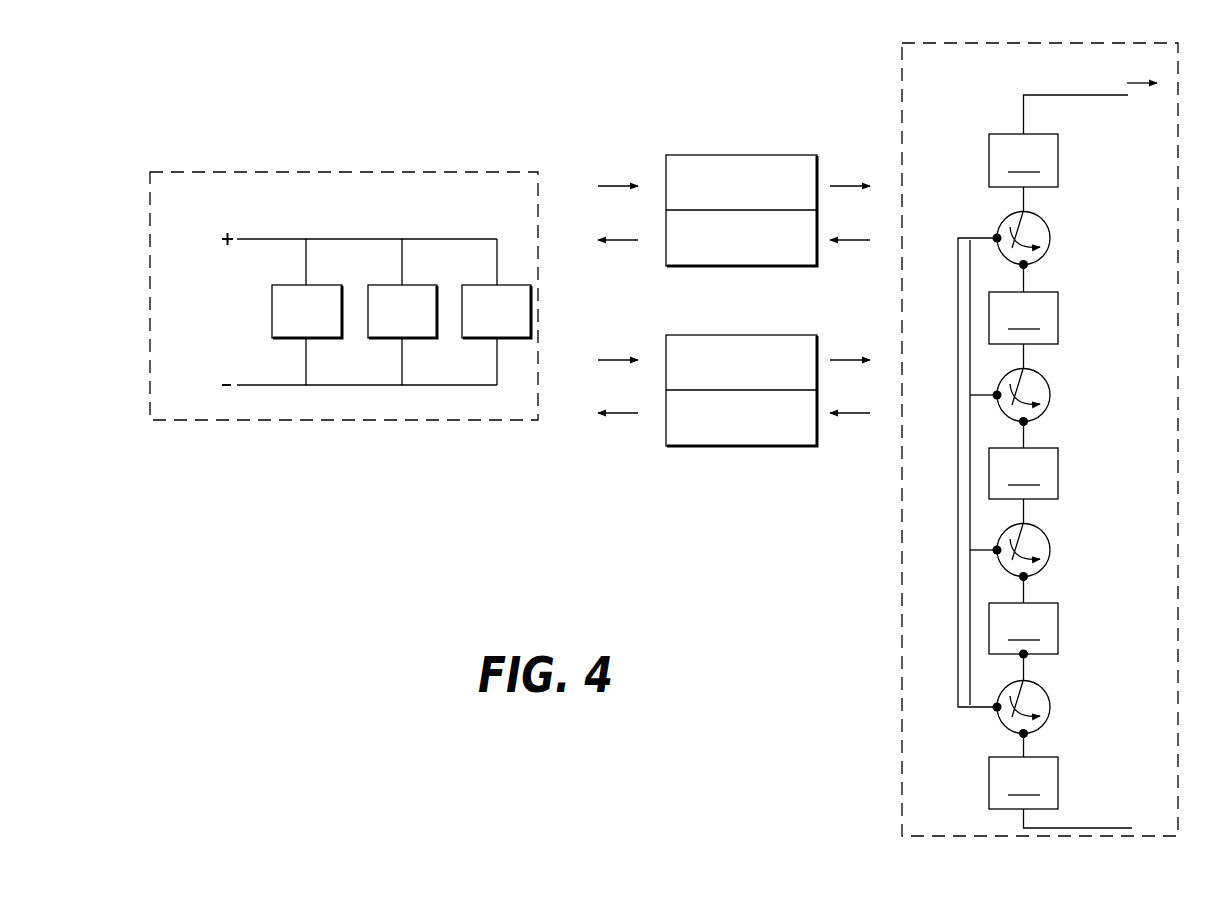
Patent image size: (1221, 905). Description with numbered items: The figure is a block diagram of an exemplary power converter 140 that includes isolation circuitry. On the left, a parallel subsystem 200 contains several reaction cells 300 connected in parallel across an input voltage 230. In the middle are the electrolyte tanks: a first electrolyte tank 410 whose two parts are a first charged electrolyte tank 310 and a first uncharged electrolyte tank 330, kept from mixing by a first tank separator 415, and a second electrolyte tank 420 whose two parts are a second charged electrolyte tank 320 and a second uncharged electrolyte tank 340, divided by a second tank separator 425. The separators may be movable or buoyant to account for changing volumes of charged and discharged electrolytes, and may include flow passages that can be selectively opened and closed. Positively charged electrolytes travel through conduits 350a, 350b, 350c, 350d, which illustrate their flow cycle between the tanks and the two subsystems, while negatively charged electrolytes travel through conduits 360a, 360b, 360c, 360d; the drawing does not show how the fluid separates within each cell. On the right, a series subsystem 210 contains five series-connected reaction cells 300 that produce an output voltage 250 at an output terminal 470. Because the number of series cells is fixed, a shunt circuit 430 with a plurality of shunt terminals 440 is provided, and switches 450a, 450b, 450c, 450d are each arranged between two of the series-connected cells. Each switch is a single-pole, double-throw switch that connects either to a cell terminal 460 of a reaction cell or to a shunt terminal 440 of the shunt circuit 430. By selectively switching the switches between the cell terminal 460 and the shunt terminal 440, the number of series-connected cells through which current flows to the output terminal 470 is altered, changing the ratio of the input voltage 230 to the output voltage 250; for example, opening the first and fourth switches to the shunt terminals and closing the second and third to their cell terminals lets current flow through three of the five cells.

The power converter 140 is at (280, 98).
The parallel subsystem 200 is at (212, 421).
The input voltage 230 is at (337, 304).
The reaction cell 300 is at (665, 394).
The first charged electrolyte tank 310 is at (691, 194).
The second charged electrolyte tank 320 is at (691, 374).
The first uncharged electrolyte tank 330 is at (866, 522).
The second uncharged electrolyte tank 340 is at (691, 429).
The conduit 350a is at (593, 184).
The conduit 350b is at (863, 168).
The conduit 350c is at (863, 224).
The conduit 350d is at (593, 237).
The conduit 360a is at (593, 359).
The conduit 360b is at (863, 344).
The conduit 360c is at (863, 398).
The conduit 360d is at (593, 410).
The first electrolyte tank 410 is at (681, 155).
The first tank separator 415 is at (666, 210).
The second electrolyte tank 420 is at (684, 335).
The second tank separator 425 is at (666, 390).
The series subsystem 210 is at (902, 562).
The output voltage 250 is at (1092, 93).
The output terminal 470 is at (1178, 140).
The shunt circuit 430 is at (965, 647).
The shunt terminal 440 is at (980, 237).
The switch 450a is at (1050, 236).
The switch 450b is at (1050, 397).
The switch 450c is at (1050, 552).
The switch 450d is at (1050, 695).
The cell terminal 460 is at (1028, 268).